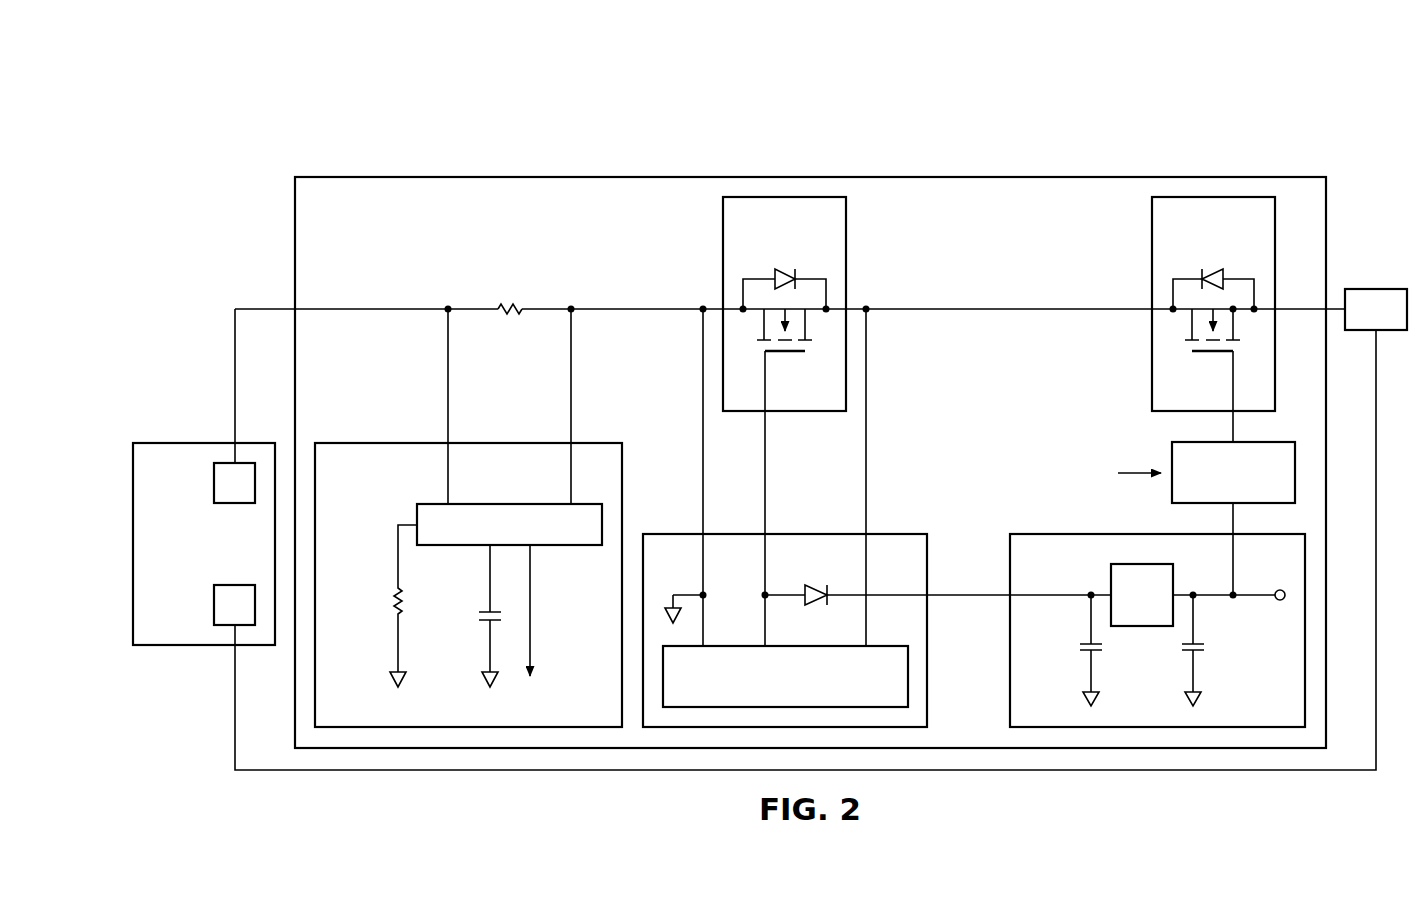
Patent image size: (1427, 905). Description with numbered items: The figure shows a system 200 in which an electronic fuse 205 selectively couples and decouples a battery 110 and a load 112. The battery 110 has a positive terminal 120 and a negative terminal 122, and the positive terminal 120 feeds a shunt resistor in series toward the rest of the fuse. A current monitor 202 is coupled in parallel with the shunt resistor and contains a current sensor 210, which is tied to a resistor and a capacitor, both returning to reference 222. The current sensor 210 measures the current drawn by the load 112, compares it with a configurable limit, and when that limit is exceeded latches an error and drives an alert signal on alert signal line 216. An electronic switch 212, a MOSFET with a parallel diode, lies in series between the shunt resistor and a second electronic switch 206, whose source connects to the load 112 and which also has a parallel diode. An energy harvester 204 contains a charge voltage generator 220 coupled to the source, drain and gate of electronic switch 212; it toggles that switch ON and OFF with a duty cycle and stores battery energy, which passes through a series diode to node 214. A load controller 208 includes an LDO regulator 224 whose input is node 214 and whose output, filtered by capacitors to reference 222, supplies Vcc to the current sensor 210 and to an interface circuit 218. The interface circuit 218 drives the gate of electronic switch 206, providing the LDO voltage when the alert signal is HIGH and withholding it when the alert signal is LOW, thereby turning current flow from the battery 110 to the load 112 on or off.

The system 200 is at (990, 114).
The electronic fuse 205 is at (540, 175).
The battery 110 is at (181, 440).
The positive terminal 120 is at (213, 485).
The negative terminal 122 is at (213, 606).
The load 112 is at (1388, 288).
The current monitor 202 is at (367, 440).
The current sensor 210 is at (508, 502).
The electronic switch 212 is at (800, 356).
The electronic switch 206 is at (1200, 356).
The energy harvester 204 is at (801, 531).
The charge voltage generator 220 is at (745, 644).
The node 214 is at (968, 592).
The load controller 208 is at (1031, 531).
The LDO regulator 224 is at (1143, 628).
The interface circuit 218 is at (1171, 452).
The alert signal line 216 is at (534, 605).
The reference 222 is at (396, 650).